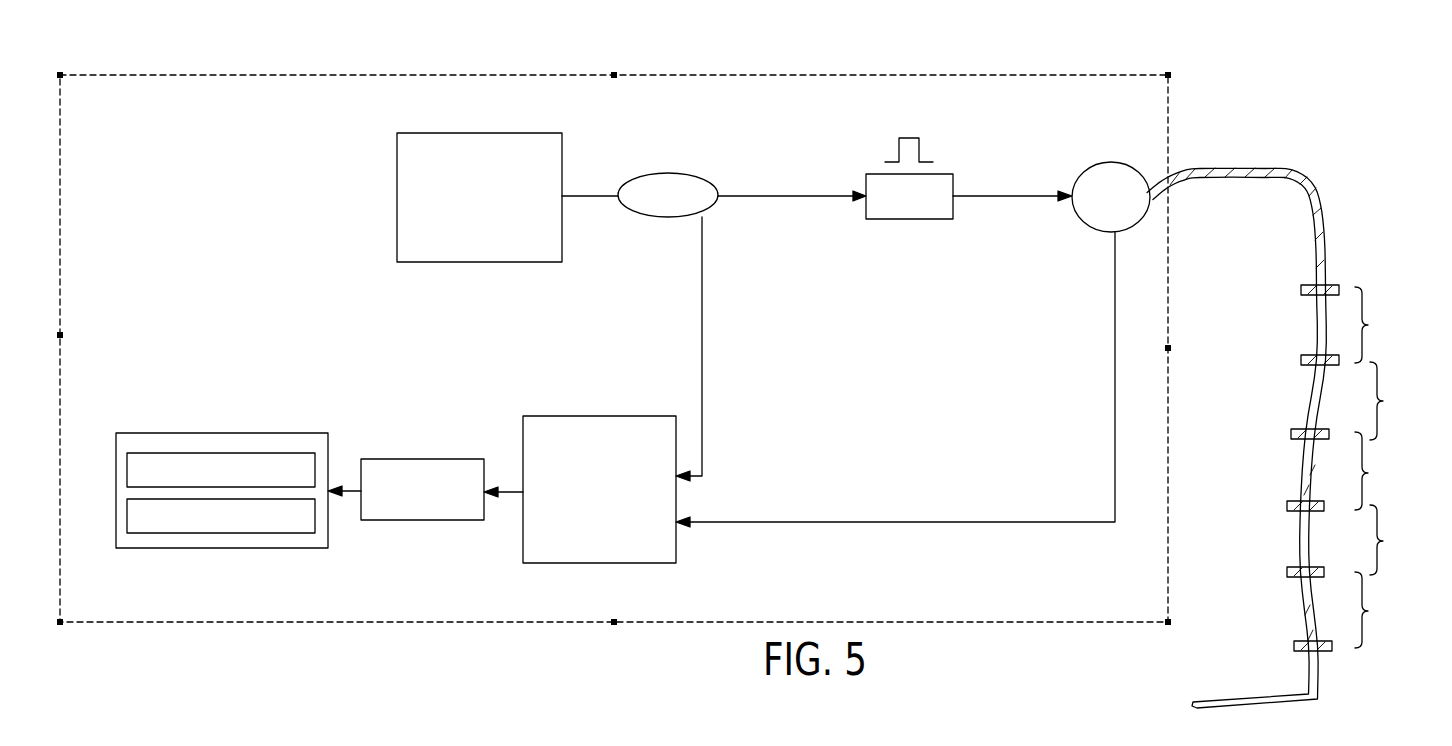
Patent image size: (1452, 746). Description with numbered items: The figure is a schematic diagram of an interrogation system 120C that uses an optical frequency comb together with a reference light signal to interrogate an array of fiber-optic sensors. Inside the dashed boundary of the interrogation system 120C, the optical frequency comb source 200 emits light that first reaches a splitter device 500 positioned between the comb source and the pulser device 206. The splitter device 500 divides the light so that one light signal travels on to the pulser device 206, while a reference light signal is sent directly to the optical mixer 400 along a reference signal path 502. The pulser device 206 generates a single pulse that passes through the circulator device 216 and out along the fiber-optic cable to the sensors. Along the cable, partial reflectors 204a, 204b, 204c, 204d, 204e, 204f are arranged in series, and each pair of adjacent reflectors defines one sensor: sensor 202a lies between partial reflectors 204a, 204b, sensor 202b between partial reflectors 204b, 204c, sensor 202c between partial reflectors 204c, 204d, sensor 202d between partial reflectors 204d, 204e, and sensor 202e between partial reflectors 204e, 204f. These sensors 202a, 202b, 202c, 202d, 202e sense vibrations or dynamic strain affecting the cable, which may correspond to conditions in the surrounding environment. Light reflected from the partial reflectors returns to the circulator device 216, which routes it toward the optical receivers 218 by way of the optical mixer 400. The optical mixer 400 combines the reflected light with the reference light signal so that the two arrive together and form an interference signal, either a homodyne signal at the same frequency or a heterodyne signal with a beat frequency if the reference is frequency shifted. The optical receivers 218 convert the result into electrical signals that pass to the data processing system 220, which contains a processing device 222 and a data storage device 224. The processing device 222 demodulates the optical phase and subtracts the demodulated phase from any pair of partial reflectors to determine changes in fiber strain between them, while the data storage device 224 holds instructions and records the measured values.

The interrogation system 120C is at (1172, 128).
The optical frequency comb source 200 is at (455, 133).
The splitter device 500 is at (681, 173).
The pulser device 206 is at (946, 174).
The circulator device 216 is at (1104, 162).
The reference signal path 502 is at (703, 371).
The optical mixer 400 is at (590, 416).
The optical receivers 218 is at (395, 459).
The data processing system 220 is at (197, 526).
The processing device 222 is at (127, 471).
The data storage device 224 is at (127, 515).
The partial reflector 204a is at (1284, 292).
The partial reflector 204b is at (1284, 362).
The partial reflector 204c is at (1274, 436).
The partial reflector 204d is at (1269, 508).
The partial reflector 204e is at (1269, 574).
The partial reflector 204f is at (1274, 648).
The optical sensor 202a is at (1383, 325).
The optical sensor 202b is at (1399, 401).
The optical sensor 202c is at (1383, 471).
The optical sensor 202d is at (1399, 540).
The optical sensor 202e is at (1385, 610).